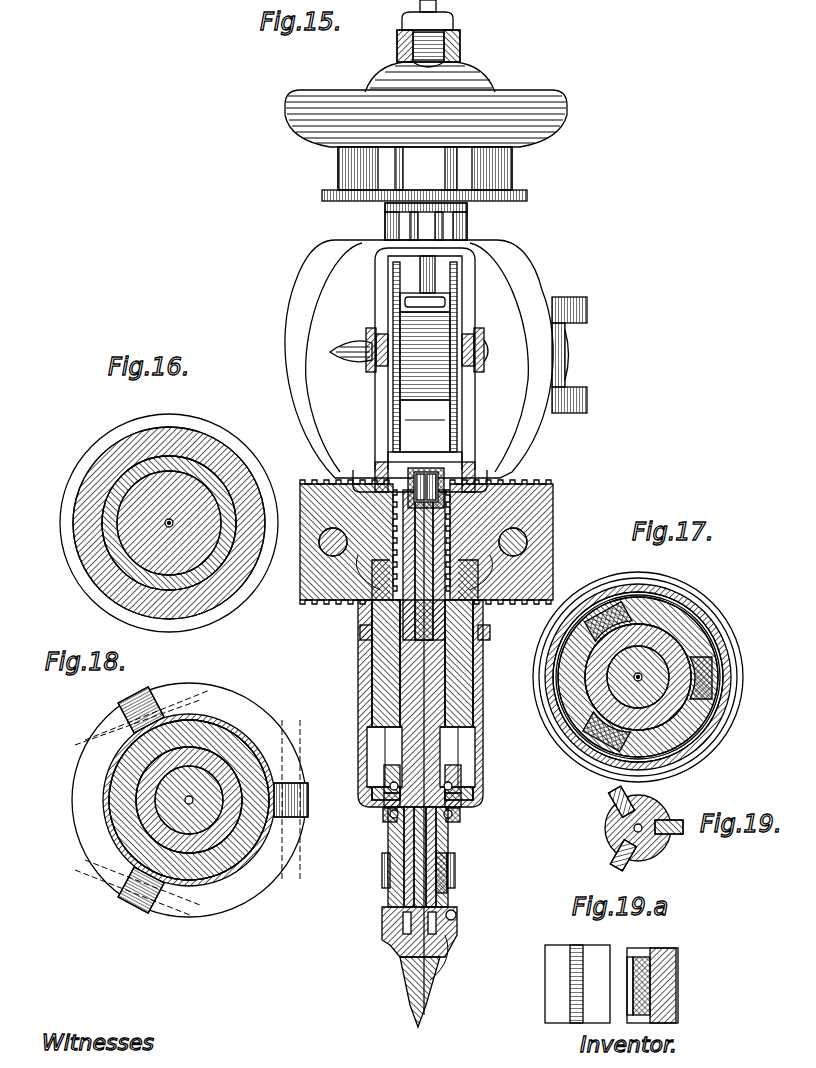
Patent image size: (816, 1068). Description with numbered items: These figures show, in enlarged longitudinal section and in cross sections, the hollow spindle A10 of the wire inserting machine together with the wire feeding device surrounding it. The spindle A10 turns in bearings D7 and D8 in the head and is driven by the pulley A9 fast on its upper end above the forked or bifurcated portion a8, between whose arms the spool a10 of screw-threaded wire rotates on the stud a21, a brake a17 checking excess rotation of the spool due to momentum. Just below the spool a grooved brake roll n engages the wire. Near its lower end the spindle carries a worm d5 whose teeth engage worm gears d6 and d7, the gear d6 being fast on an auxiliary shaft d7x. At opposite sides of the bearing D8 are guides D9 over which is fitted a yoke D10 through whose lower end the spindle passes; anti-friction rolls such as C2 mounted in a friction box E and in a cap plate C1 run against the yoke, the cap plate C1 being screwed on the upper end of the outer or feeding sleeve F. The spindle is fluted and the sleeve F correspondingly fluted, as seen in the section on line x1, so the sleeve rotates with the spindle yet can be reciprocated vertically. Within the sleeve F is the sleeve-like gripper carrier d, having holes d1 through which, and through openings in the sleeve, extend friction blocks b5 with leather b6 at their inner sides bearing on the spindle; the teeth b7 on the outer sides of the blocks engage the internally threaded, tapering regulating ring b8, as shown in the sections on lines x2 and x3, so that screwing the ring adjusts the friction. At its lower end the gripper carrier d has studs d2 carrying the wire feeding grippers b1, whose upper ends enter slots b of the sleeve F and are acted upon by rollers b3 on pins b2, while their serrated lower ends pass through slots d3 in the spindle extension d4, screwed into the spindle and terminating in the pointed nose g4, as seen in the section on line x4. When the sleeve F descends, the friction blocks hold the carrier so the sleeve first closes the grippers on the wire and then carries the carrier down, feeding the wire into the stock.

In FIG. 15, the hollow spindle A10 is at (455, 45).
In FIG. 16, the hollow spindle A10 is at (178, 490).
In FIG. 18, the hollow spindle A10 is at (230, 755).
In FIG. 17, the hollow spindle A10 is at (665, 655).
In FIG. 15, the pulley A9 is at (500, 166).
In FIG. 15, the bearing D7 is at (462, 221).
In FIG. 15, the brake a17 is at (435, 272).
In FIG. 15, the forked or bifurcated portion of the spindle a8 is at (468, 300).
In FIG. 15, the stud a21 is at (490, 352).
In FIG. 15, the spool a10 is at (465, 403).
In FIG. 15, the guides D9 is at (515, 465).
In FIG. 15, the worm gear d7 is at (330, 490).
In FIG. 15, the brake wheel or roll n is at (420, 479).
In FIG. 15, the worm d5 is at (500, 490).
In FIG. 15, the worm gear d6 is at (550, 500).
In FIG. 15, the auxiliary shaft d7x is at (520, 540).
In FIG. 15, the bearing D8 is at (455, 712).
In FIG. 15, the yoke D10 is at (462, 740).
In FIG. 15, the cap plate C1 is at (455, 777).
In FIG. 16, the cap plate C1 is at (100, 585).
In FIG. 15, the section line x1 is at (380, 777).
In FIG. 15, the anti-friction roll C2 is at (475, 797).
In FIG. 15, the friction box E is at (465, 815).
In FIG. 15, the outer or feeding sleeve F is at (390, 845).
In FIG. 16, the outer or feeding sleeve F is at (105, 456).
In FIG. 18, the outer or feeding sleeve F is at (240, 875).
In FIG. 15, the section line x2 is at (382, 873).
In FIG. 15, the section line x3 is at (390, 896).
In FIG. 15, the regulating ring b8 is at (446, 862).
In FIG. 17, the regulating ring b8 is at (700, 625).
In FIG. 15, the friction block b5 is at (452, 868).
In FIG. 17, the friction block b5 is at (610, 600).
In FIG. 19A, the friction block b5 is at (545, 1012).
In FIG. 15, the sleeve-like gripper carrier d is at (392, 900).
In FIG. 18, the sleeve-like gripper carrier d is at (108, 777).
In FIG. 15, the holes in gripper carrier d1 is at (452, 908).
In FIG. 15, the anti-friction roller b3 is at (456, 916).
In FIG. 18, the anti-friction roller b3 is at (118, 710).
In FIG. 15, the pin b2 is at (455, 925).
In FIG. 18, the pin b2 is at (292, 752).
In FIG. 15, the section line x4 is at (400, 965).
In FIG. 15, the stud d2 is at (440, 960).
In FIG. 15, the wire feeding gripper b1 is at (435, 975).
In FIG. 18, the wire feeding gripper b1 is at (145, 698).
In FIG. 19, the wire feeding gripper b1 is at (610, 800).
In FIG. 15, the spindle extension d4 is at (408, 994).
In FIG. 18, the spindle extension d4 is at (150, 810).
In FIG. 17, the spindle extension d4 is at (700, 700).
In FIG. 19, the spindle extension d4 is at (668, 810).
In FIG. 15, the slot d3 is at (428, 1000).
In FIG. 15, the nose of spindle extension g4 is at (414, 1020).
In FIG. 18, the slot b is at (302, 835).
In FIG. 17, the projecting teeth b7 is at (590, 600).
In FIG. 19A, the projecting teeth b7 is at (570, 972).
In FIG. 19A, the piece of leather b6 is at (645, 1000).